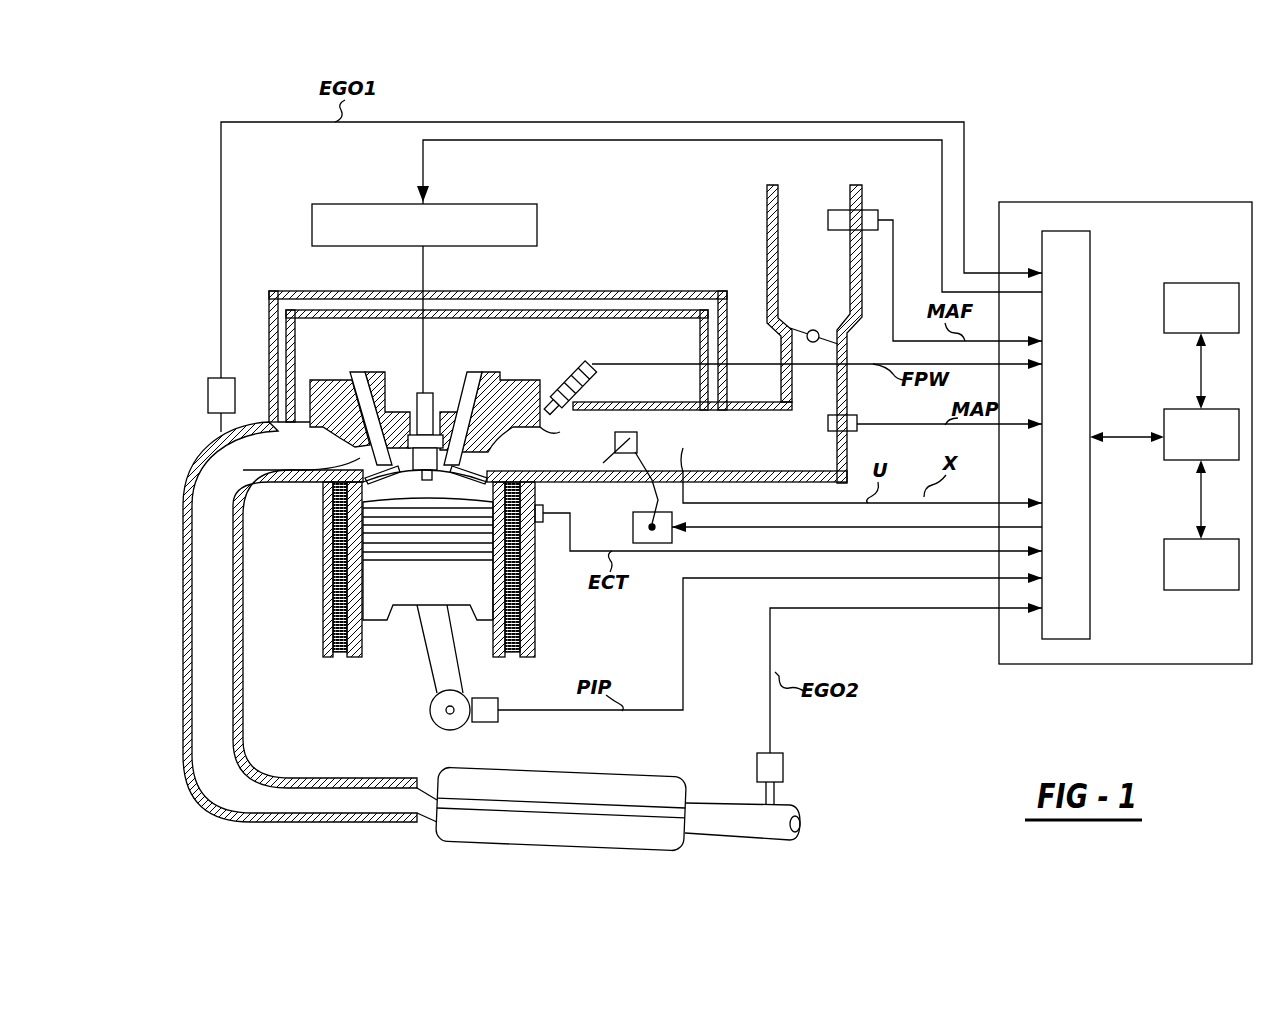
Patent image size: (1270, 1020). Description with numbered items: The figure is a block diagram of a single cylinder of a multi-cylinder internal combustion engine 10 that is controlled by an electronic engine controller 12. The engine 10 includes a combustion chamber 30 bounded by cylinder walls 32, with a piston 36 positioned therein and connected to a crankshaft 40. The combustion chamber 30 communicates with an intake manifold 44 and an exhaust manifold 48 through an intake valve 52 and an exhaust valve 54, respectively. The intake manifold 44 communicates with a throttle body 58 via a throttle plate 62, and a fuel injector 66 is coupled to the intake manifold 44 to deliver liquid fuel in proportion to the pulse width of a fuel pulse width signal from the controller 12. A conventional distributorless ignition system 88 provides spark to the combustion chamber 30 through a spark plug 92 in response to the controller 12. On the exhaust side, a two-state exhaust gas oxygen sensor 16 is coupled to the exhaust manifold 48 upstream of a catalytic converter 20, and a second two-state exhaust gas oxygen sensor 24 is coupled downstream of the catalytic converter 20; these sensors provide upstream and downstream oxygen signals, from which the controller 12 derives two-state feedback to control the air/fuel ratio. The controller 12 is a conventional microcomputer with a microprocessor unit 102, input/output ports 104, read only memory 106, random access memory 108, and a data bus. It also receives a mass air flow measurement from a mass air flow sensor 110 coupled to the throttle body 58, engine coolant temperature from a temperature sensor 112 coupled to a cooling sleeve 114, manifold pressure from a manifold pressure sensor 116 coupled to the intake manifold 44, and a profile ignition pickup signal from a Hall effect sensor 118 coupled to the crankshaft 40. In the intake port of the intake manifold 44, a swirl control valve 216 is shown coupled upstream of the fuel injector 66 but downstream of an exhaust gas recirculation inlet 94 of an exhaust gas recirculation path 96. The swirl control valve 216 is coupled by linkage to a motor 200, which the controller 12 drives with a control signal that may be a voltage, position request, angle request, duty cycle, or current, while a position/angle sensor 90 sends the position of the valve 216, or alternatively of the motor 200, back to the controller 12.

The internal combustion engine 10 is at (280, 262).
The electronic engine controller 12 is at (1138, 270).
The two-state exhaust gas oxygen sensor 16 is at (208, 404).
The catalytic converter 20 is at (500, 770).
The two-state exhaust gas oxygen sensor 24 is at (783, 768).
The combustion chamber 30 is at (372, 538).
The cylinder walls 32 is at (360, 657).
The piston 36 is at (428, 593).
The crankshaft 40 is at (431, 712).
The intake manifold 44 is at (710, 450).
The exhaust manifold 48 is at (214, 456).
The intake valve 52 is at (527, 452).
The exhaust valve 54 is at (348, 456).
The throttle body 58 is at (772, 230).
The throttle plate 62 is at (794, 326).
The fuel injector 66 is at (574, 375).
The distributorless ignition system 88 is at (537, 222).
The position/angle sensor 90 is at (852, 467).
The spark plug 92 is at (434, 392).
The exhaust gas recirculation inlet 94 is at (727, 395).
The exhaust gas recirculation path 96 is at (600, 291).
The microprocessor unit 102 is at (1172, 409).
The input/output ports 104 is at (1090, 252).
The read only memory 106 is at (1194, 281).
The random access memory 108 is at (1175, 539).
The mass air flow sensor 110 is at (840, 210).
The temperature sensor 112 is at (570, 513).
The cooling sleeve 114 is at (536, 634).
The manifold pressure sensor 116 is at (860, 434).
The Hall effect sensor 118 is at (488, 704).
The motor 200 is at (672, 540).
The swirl control valve 216 is at (638, 428).